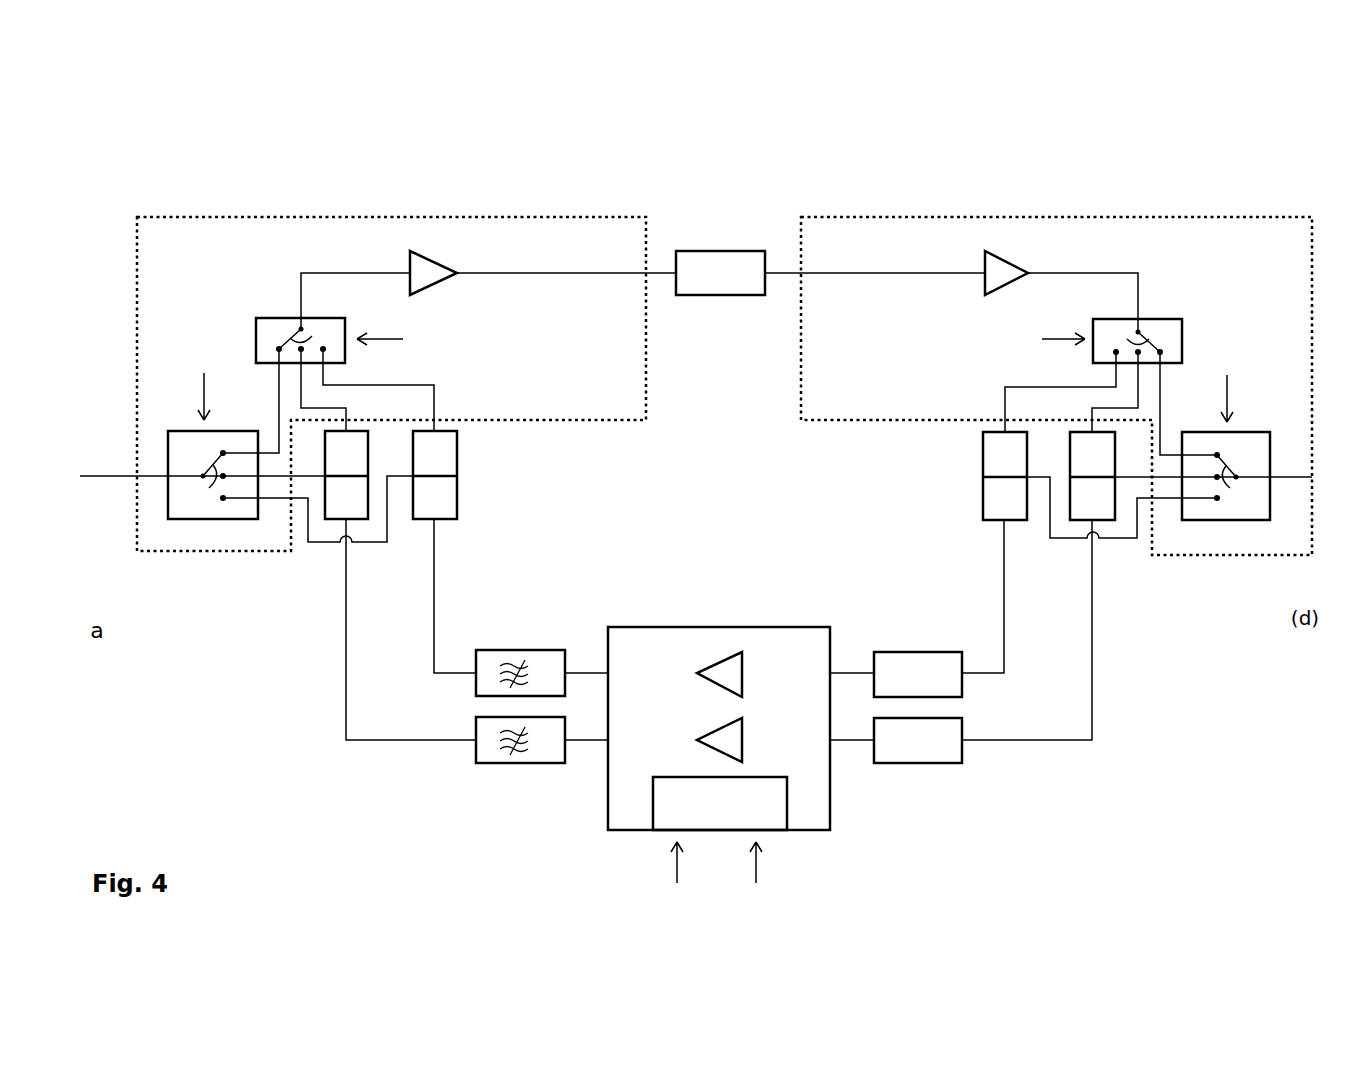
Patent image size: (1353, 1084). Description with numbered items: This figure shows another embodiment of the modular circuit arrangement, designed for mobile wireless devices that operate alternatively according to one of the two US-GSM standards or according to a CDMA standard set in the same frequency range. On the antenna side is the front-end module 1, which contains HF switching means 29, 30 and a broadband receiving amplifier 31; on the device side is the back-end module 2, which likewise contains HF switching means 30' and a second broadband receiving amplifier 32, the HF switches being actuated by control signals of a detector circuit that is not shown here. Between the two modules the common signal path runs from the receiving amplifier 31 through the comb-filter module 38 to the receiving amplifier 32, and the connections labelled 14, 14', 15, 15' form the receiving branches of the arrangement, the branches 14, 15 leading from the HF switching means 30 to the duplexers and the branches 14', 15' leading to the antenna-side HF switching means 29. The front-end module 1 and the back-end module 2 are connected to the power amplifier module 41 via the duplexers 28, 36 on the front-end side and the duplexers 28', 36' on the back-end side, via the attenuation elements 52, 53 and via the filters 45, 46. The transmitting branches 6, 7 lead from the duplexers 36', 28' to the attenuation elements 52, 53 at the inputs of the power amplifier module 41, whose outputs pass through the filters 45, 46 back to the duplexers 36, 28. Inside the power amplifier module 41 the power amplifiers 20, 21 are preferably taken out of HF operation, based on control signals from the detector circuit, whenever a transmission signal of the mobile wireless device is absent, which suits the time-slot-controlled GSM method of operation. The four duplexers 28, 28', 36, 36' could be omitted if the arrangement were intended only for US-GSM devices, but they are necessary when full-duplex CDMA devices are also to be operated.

The front-end module 1 is at (173, 262).
The back-end module 2 is at (1250, 262).
The transmitting branch 6 is at (1004, 647).
The transmitting branch 7 is at (1092, 663).
The receiving branch 14 is at (643, 286).
The receiving branch 14' is at (224, 382).
The receiving branch 15 is at (439, 379).
The receiving branch 15' is at (224, 382).
The power amplifier 20 is at (725, 677).
The power amplifier 21 is at (737, 747).
The duplexer 28 is at (349, 585).
The duplexer 28' is at (1143, 507).
The HF switching means 29 is at (177, 453).
The HF switching means 30 is at (319, 265).
The HF switching means 30' is at (1137, 257).
The receiving amplifier 31 is at (420, 272).
The receiving amplifier 32 is at (996, 272).
The duplexer 36 is at (487, 552).
The duplexer 36' is at (1042, 472).
The comb-filter module 38 is at (706, 285).
The power amplifier module 41 is at (762, 714).
The filter 45 is at (490, 687).
The filter 46 is at (488, 760).
The attenuation element 52 is at (904, 687).
The attenuation element 53 is at (904, 753).